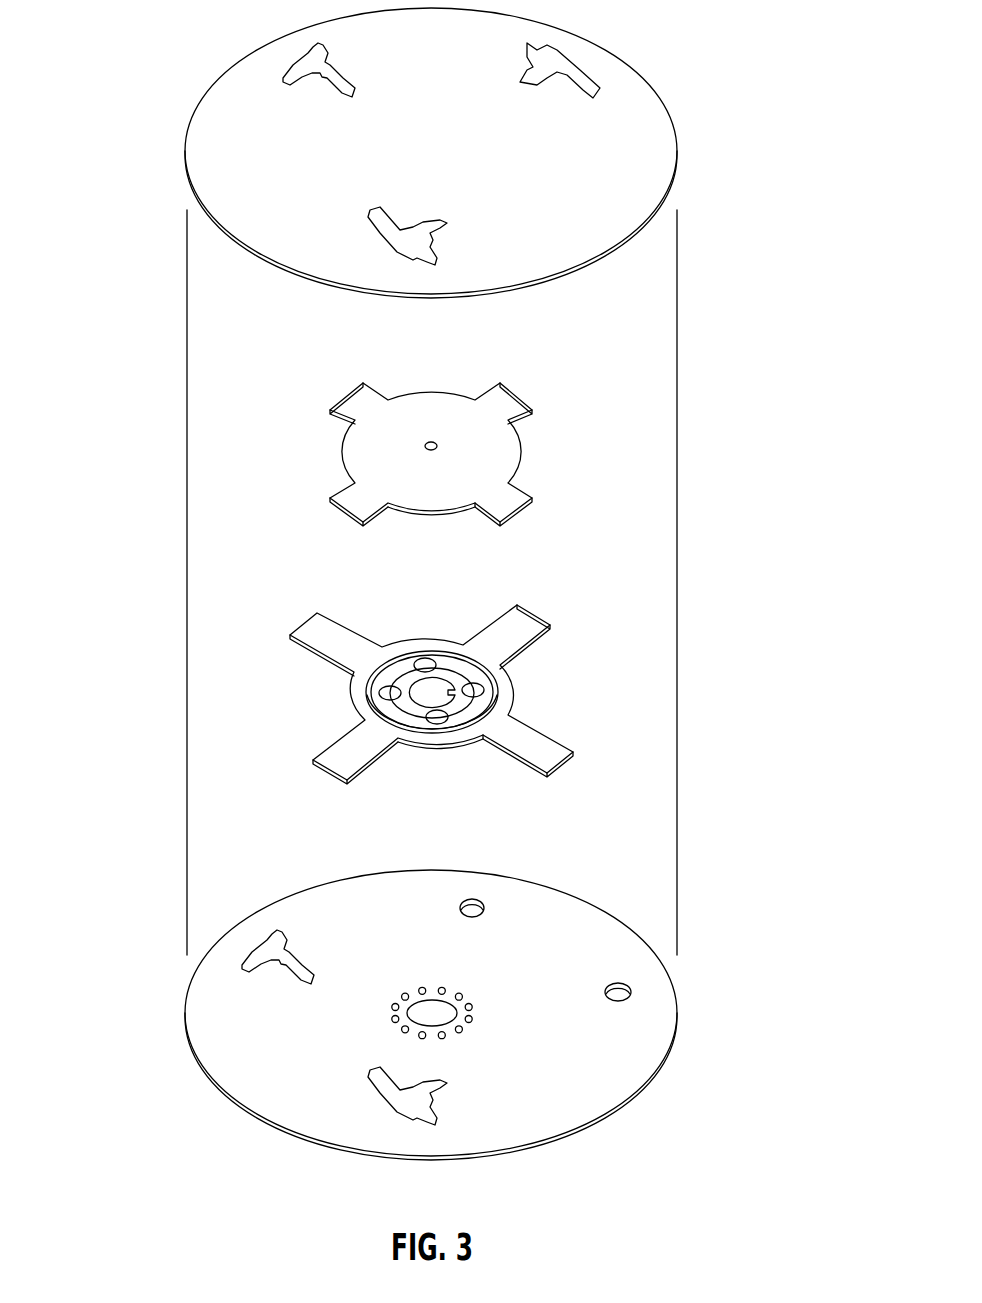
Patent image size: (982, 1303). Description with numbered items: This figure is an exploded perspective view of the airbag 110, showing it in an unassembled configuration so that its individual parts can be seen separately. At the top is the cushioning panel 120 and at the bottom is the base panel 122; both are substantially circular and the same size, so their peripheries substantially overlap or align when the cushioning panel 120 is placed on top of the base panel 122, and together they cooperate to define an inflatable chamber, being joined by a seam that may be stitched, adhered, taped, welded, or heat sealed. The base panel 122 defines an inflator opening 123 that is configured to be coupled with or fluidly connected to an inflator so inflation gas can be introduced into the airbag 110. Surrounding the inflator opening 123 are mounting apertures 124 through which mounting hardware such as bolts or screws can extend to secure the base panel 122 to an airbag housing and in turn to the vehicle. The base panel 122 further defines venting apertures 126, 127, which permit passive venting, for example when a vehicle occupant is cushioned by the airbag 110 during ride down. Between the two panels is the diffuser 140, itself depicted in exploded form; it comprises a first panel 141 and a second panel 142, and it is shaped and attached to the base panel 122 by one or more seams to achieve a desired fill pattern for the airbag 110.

The airbag 110 is at (378, 9).
The cushioning panel 120 is at (410, 166).
The base panel 122 is at (321, 1025).
The inflator opening 123 is at (430, 1000).
The mounting apertures 124 is at (473, 1018).
The venting aperture 126 is at (632, 992).
The venting aperture 127 is at (485, 908).
The diffuser 140 is at (585, 383).
The first panel 141 is at (357, 700).
The second panel 142 is at (455, 412).